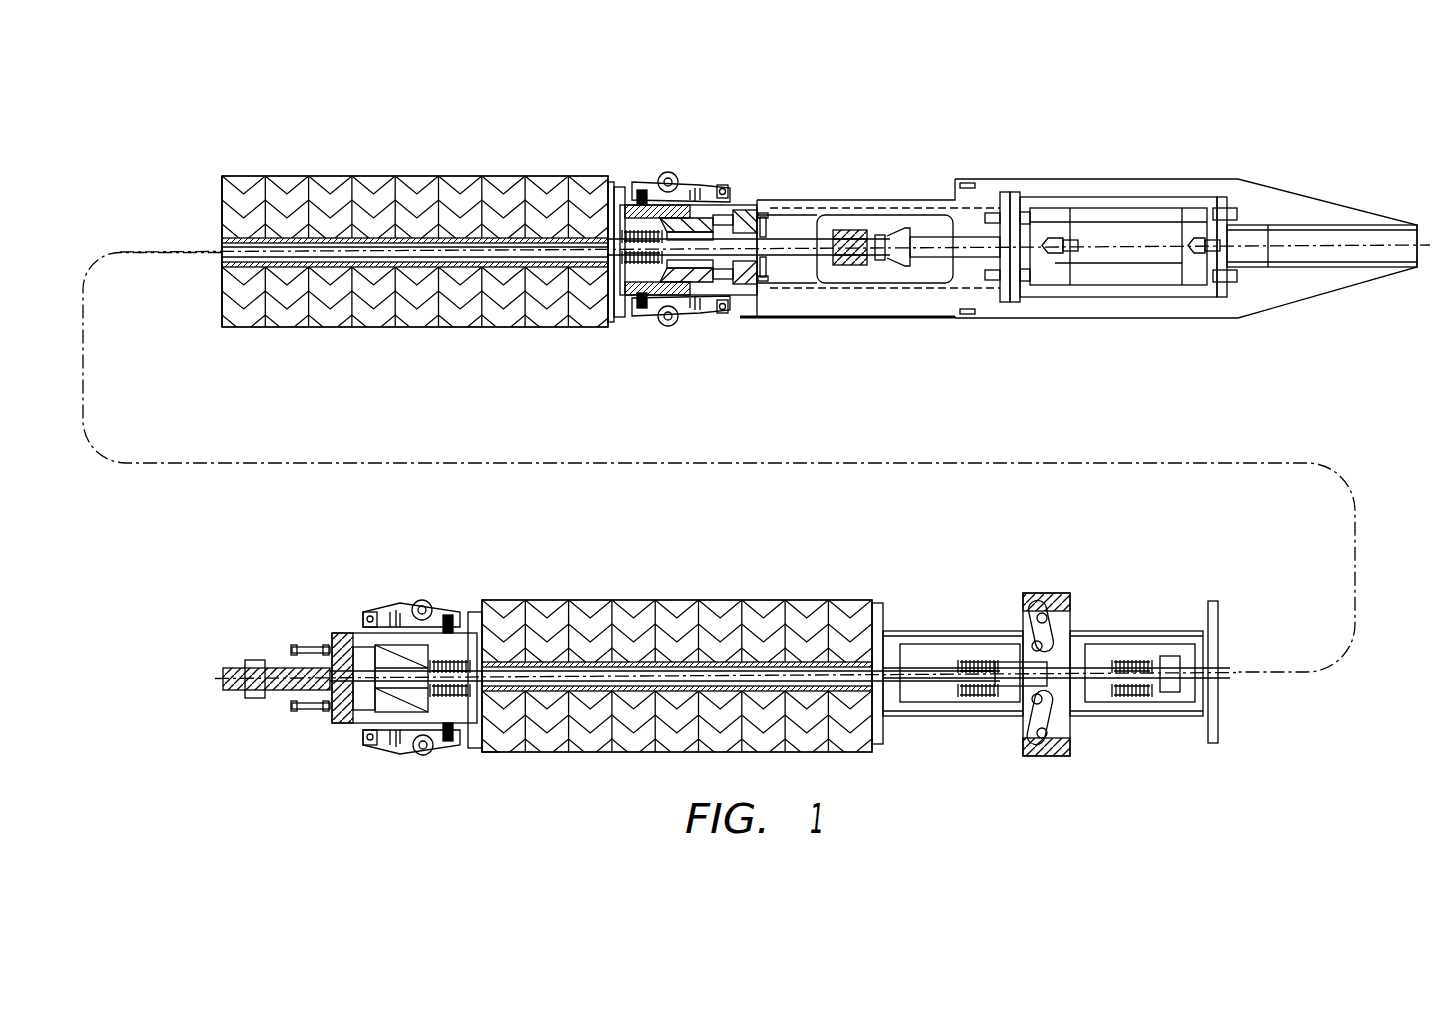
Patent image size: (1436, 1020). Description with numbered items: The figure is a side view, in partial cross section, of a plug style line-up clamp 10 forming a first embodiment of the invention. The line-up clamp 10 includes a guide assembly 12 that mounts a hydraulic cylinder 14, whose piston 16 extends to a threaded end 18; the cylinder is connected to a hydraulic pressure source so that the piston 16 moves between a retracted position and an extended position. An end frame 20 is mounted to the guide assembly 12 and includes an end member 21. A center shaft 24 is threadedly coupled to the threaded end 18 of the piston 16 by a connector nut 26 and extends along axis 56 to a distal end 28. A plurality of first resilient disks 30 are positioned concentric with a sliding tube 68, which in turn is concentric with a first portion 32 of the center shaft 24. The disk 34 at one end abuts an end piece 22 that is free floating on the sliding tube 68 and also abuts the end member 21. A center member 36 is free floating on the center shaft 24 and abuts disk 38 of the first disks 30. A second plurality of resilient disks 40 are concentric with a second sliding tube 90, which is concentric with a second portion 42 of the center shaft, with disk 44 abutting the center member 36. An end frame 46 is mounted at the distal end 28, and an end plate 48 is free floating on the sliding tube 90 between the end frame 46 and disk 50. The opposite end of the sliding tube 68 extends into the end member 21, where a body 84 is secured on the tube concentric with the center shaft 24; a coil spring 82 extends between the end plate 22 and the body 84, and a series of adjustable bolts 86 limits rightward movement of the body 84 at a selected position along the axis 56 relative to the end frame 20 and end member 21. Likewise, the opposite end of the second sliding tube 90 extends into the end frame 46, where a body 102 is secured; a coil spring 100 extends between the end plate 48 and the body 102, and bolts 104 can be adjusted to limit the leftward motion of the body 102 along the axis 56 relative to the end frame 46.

The plug style line-up clamp 10 is at (497, 133).
The guide assembly 12 is at (1097, 179).
The hydraulic cylinder 14 is at (1095, 298).
The piston 16 is at (940, 236).
The threaded end 18 is at (888, 260).
The end frame 20 is at (868, 200).
The end member 21 is at (734, 200).
The end piece 22 is at (616, 178).
The center shaft 24 is at (820, 236).
The connector nut 26 is at (872, 266).
The distal end 28 is at (233, 692).
The first resilient disks 30 is at (397, 168).
The first portion 32 is at (222, 259).
The disk 34 is at (608, 178).
The center member 36 is at (1177, 732).
The disk 38 is at (230, 176).
The second resilient disks 40 is at (799, 590).
The second portion 42 is at (601, 640).
The disk 44 is at (872, 602).
The end frame 46 is at (352, 633).
The end plate 48 is at (472, 610).
The disk 50 is at (492, 752).
The axis 56 is at (140, 252).
The sliding tube 68 is at (222, 240).
The coil spring 82 is at (668, 326).
The body 84 is at (718, 295).
The adjustable bolts 86 is at (786, 212).
The second sliding tube 90 is at (668, 692).
The coil spring 100 is at (420, 756).
The body 102 is at (375, 733).
The bolts 104 is at (320, 647).